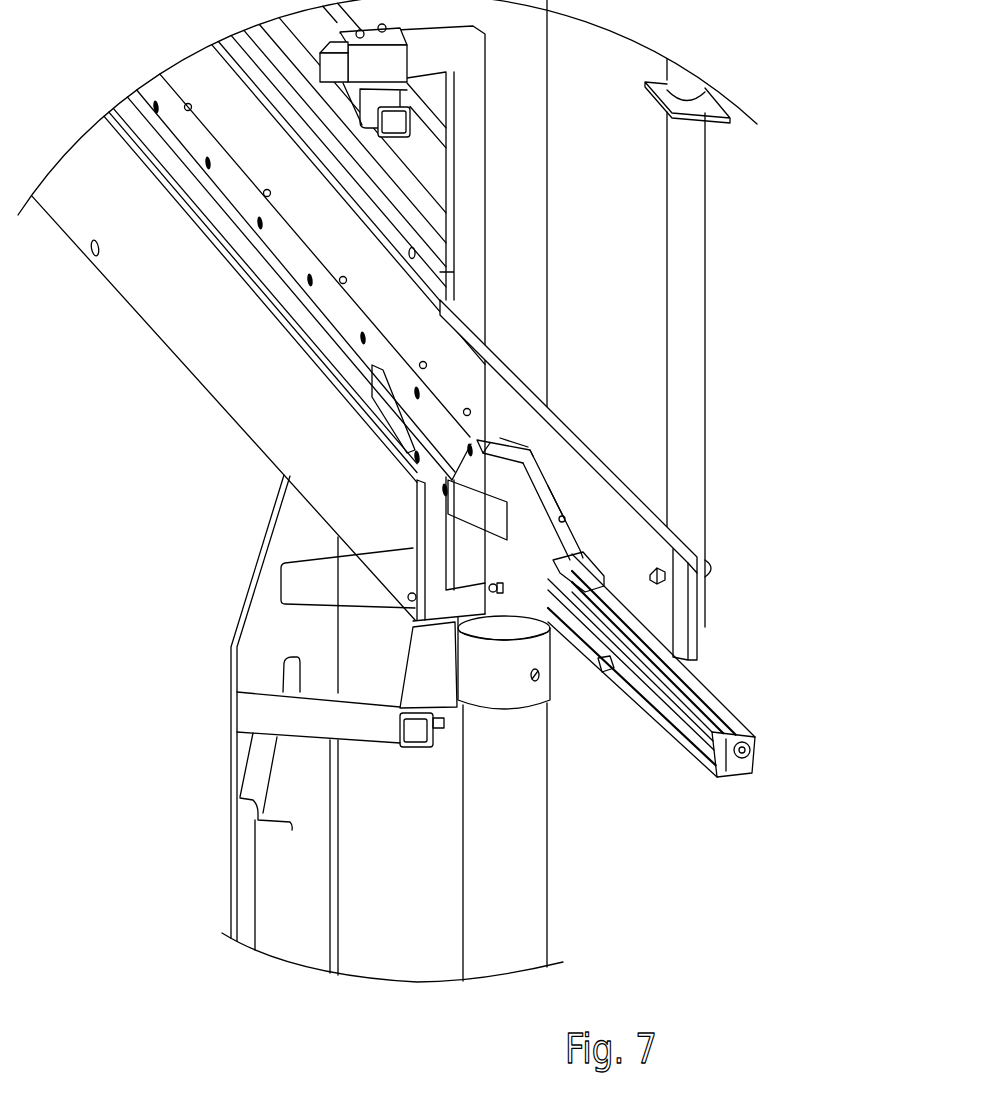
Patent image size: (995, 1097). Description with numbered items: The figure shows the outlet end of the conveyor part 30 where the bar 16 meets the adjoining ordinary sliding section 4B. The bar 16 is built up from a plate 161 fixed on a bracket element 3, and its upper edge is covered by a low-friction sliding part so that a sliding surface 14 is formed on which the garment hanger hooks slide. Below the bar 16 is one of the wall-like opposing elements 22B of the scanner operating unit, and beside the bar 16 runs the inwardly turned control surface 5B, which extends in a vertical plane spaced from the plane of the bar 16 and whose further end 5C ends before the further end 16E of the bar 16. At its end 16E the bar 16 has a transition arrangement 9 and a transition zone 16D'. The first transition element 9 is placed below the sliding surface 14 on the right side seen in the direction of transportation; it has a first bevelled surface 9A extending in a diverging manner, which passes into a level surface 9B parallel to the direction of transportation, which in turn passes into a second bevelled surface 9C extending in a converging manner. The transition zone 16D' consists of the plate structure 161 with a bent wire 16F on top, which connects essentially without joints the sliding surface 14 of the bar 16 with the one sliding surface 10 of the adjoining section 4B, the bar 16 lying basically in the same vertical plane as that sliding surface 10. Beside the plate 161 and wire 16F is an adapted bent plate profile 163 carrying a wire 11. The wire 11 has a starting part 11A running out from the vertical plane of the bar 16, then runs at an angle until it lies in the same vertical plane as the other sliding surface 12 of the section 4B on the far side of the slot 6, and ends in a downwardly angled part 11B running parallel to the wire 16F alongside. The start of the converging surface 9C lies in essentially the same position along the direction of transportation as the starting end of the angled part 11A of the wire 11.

The sliding surface 14 is at (283, 208).
The bar 16 is at (333, 297).
The control surface 5B is at (268, 408).
The further end 5C is at (422, 546).
The plate 161 is at (410, 592).
The transition zone 16D' is at (284, 661).
The opposing element 22B is at (230, 713).
The part 30 is at (149, 833).
The transition arrangement 9 is at (407, 445).
The first bevelled surface 9A is at (385, 405).
The level surface 9B is at (463, 437).
The second bevelled surface 9C is at (543, 488).
The end of the bar 16E is at (497, 440).
The wire 11 is at (548, 522).
The starting part 11A is at (518, 442).
The downwardly angled part 11B is at (565, 505).
The bent plate profile 163 is at (565, 517).
The bent wire 16F is at (547, 538).
The bracket element 3 is at (670, 603).
The sliding surface 12 is at (728, 712).
The sliding surface 10 is at (705, 727).
The sliding section 4B is at (700, 763).
The slot 6 is at (752, 757).